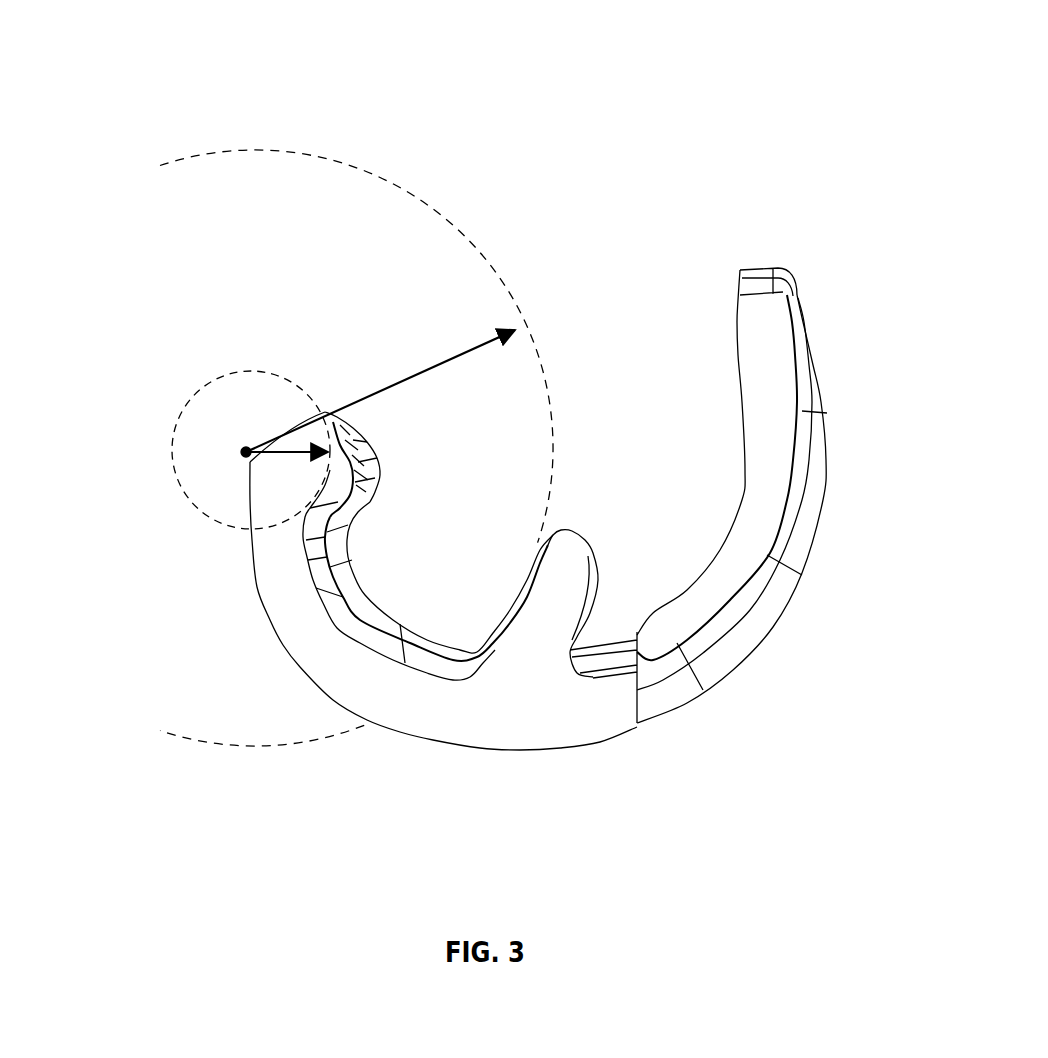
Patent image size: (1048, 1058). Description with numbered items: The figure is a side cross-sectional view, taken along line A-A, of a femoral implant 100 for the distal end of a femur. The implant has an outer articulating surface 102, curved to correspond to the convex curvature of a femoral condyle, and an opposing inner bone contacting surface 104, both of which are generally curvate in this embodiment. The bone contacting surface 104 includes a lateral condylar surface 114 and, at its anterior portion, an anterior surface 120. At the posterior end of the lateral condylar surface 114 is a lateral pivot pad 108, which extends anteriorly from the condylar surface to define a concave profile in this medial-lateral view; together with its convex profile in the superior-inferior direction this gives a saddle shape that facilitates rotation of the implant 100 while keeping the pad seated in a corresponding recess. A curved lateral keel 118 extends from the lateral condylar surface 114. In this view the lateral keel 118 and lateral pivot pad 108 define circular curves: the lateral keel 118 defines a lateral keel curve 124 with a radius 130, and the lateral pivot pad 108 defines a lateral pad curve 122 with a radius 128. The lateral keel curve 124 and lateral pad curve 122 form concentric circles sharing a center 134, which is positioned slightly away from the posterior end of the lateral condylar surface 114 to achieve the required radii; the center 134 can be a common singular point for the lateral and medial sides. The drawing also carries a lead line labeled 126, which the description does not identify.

The femoral implant 100 is at (892, 133).
The outer articulating surface 102 is at (848, 408).
The inner bone contacting surface 104 is at (693, 550).
The lateral pivot pad 108 is at (323, 478).
The lateral condylar surface 114 is at (337, 628).
The lateral keel 118 is at (585, 587).
The anterior surface 120 is at (744, 407).
The lateral pad curve 122 is at (272, 377).
The lateral keel curve 124 is at (390, 187).
The outer region 126 is at (628, 127).
The radius 128 is at (288, 455).
The radius 130 is at (427, 375).
The center 134 is at (246, 452).